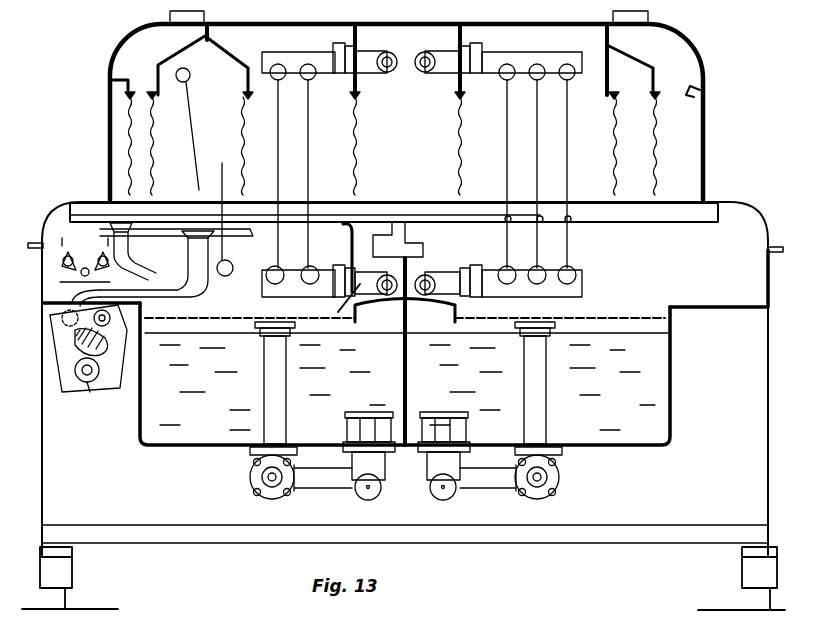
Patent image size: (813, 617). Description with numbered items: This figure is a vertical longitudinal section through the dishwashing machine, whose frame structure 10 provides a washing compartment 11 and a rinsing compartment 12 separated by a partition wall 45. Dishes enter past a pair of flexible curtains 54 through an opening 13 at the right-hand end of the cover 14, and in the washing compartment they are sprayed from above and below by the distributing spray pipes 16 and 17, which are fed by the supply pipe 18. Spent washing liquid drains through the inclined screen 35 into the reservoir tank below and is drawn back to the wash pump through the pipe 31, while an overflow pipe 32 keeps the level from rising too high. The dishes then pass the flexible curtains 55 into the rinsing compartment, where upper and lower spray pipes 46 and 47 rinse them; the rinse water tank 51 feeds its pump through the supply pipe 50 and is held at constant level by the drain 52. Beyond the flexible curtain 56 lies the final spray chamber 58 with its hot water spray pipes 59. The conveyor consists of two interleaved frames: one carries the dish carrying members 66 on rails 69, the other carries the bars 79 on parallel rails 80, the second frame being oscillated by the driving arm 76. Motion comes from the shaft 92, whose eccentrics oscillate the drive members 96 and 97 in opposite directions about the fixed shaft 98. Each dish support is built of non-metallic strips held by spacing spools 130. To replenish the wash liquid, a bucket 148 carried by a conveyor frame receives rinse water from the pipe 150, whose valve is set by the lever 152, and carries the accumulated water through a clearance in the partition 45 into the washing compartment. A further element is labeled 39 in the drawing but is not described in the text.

The frame structure 10 is at (720, 185).
The washing compartment 11 is at (598, 147).
The rinsing compartment 12 is at (339, 157).
The opening 13 is at (708, 98).
The cover 14 is at (688, 42).
The distributing spray pipe 16 is at (551, 51).
The distributing spray pipe 17 is at (580, 280).
The supply pipe 18 is at (425, 52).
The pipe 31 is at (462, 431).
The overflow pipe 32 is at (524, 405).
The screen 35 is at (248, 318).
The tank compartment 39 is at (607, 416).
The partition wall 45 is at (444, 376).
The upper spray pipe 46 is at (314, 52).
The lower spray pipe 47 is at (298, 280).
The supply pipe 50 is at (345, 428).
The rinse water tank 51 is at (348, 396).
The drain 52 is at (264, 405).
The flexible curtains 54 is at (658, 137).
The flexible curtains 55 is at (366, 137).
The flexible curtain 56 is at (147, 131).
The final spray chamber 58 is at (216, 74).
The spray pipes 59 is at (191, 78).
The dish carrying members 66 is at (232, 226).
The rails 69 is at (62, 237).
The driving arm 76 is at (190, 295).
The dish carrying members 79 is at (266, 202).
The rails 80 is at (150, 253).
The shaft 92 is at (76, 340).
The drive member 96 is at (62, 318).
The drive member 97 is at (102, 371).
The fixed shaft 98 is at (90, 392).
The spacing spools 130 is at (571, 222).
The bucket 148 is at (420, 250).
The pipe 150 is at (318, 248).
The lever 152 is at (362, 310).